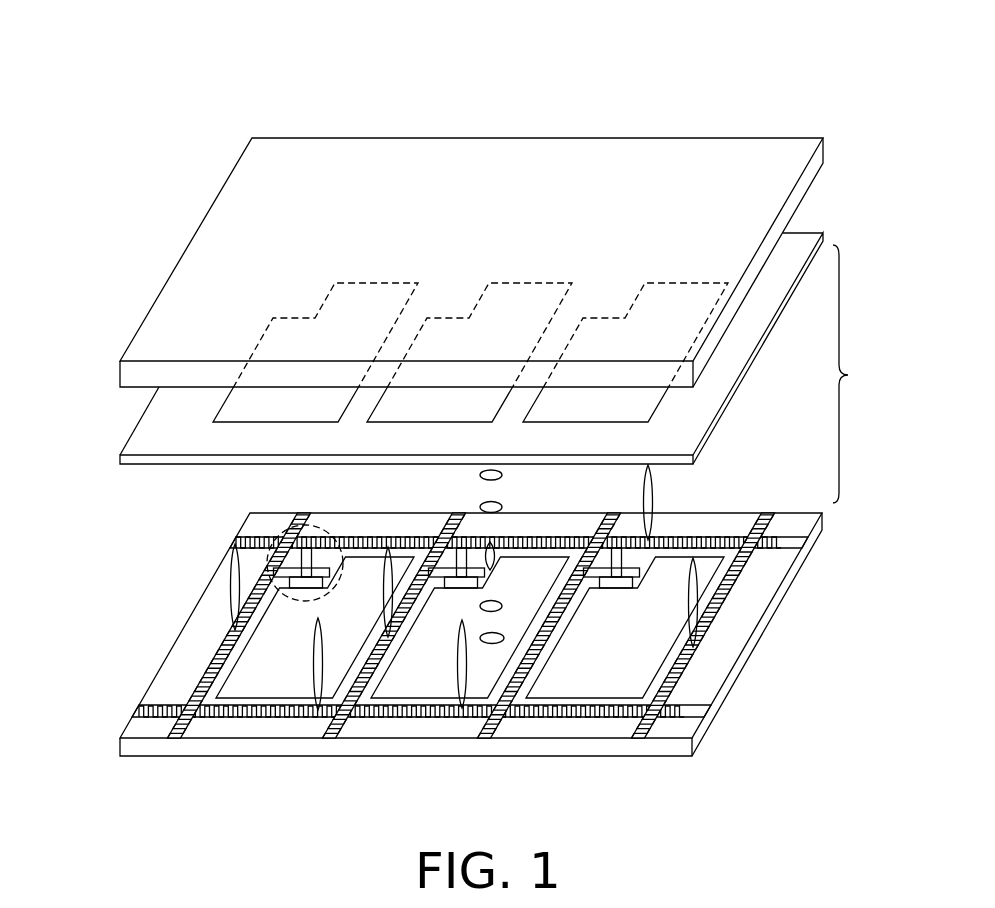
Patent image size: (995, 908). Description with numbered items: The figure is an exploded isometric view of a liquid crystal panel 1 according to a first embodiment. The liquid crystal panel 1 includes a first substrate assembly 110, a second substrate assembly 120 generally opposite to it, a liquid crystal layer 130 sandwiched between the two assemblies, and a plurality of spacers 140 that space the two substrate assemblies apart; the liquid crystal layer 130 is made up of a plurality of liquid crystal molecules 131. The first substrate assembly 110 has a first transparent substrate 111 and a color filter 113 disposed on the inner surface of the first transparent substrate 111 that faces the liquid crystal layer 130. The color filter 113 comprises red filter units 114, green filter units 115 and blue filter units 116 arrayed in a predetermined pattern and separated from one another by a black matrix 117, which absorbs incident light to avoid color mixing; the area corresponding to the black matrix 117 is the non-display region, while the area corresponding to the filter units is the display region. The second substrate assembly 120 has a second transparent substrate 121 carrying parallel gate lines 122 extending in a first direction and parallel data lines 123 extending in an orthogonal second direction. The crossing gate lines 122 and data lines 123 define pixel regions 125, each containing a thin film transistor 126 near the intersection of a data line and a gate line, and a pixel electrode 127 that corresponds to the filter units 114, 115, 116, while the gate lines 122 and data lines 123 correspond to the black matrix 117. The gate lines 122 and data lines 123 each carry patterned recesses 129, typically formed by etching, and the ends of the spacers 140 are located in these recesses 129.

The liquid crystal panel 1 is at (440, 64).
The first substrate assembly 110 is at (748, 82).
The first transparent substrate 111 is at (740, 163).
The color filter 113 is at (760, 310).
The red filter units 114 is at (257, 401).
The green filter units 115 is at (420, 404).
The blue filter units 116 is at (573, 403).
The black matrix 117 is at (518, 407).
The second substrate assembly 120 is at (182, 483).
The second transparent substrate 121 is at (135, 745).
The gate lines 122 is at (236, 540).
The data lines 123 is at (225, 638).
The pixel regions 125 is at (202, 698).
The thin film transistor 126 is at (268, 545).
The pixel electrode 127 is at (237, 680).
The patterned recesses 129 is at (757, 557).
The liquid crystal layer 130 is at (865, 374).
The liquid crystal molecules 131 is at (500, 476).
The spacers 140 is at (693, 605).